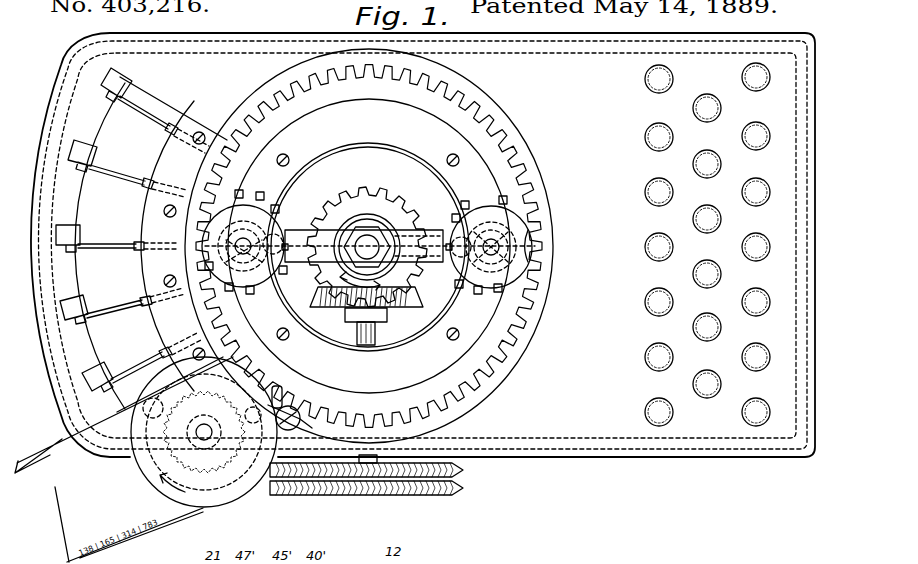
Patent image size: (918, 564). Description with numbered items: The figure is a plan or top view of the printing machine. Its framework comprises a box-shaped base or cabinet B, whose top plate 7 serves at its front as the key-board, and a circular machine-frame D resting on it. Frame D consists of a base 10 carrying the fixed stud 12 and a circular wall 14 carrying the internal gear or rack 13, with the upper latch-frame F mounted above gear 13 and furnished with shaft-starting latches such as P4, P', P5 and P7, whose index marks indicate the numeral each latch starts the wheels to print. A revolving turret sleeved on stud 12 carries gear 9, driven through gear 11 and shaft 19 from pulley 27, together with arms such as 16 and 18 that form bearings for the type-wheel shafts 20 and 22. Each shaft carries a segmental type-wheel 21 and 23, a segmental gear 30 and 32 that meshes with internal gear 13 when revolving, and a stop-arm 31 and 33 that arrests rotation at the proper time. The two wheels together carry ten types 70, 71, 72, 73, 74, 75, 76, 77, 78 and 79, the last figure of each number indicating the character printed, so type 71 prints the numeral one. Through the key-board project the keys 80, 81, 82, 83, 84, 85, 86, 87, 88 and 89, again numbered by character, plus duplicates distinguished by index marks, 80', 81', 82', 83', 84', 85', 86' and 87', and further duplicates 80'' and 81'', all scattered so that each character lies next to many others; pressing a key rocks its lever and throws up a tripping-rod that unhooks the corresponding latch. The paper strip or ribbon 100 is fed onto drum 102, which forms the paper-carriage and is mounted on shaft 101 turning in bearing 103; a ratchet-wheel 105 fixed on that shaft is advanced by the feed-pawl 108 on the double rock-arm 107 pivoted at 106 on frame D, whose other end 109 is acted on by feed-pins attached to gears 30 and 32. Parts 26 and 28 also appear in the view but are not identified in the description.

The top plate 7 is at (567, 425).
The gear 9 is at (375, 208).
The base 10 is at (368, 247).
The gear 11 is at (388, 302).
The fixed stud 12 is at (367, 247).
The internal gear 13 is at (508, 353).
The circular wall 14 is at (498, 378).
The arm 16 is at (323, 232).
The arm 18 is at (415, 234).
The shaft 19 is at (376, 336).
The type-wheel shaft 20 is at (243, 238).
The segmental type-wheel 21 is at (262, 200).
The type-wheel shaft 22 is at (491, 256).
The segmental type-wheel 23 is at (465, 201).
The lug 26 is at (230, 266).
The pulley 27 is at (463, 482).
The rim 28 is at (530, 224).
The segmental gear 30 is at (285, 270).
The stop-arm 31 is at (260, 262).
The segmental gear 32 is at (478, 294).
The stop-arm 33 is at (477, 232).
The type 70 is at (285, 246).
The type 71 is at (279, 209).
The type 72 is at (462, 206).
The type 73 is at (447, 248).
The type 74 is at (239, 190).
The type 75 is at (259, 302).
The type 76 is at (458, 285).
The type 77 is at (229, 292).
The type 78 is at (503, 196).
The type 79 is at (497, 293).
The key 80 is at (634, 198).
The key 81 is at (708, 96).
The key 82 is at (693, 219).
The key 83 is at (639, 138).
The key 84 is at (641, 80).
The key 85 is at (691, 327).
The key 86 is at (692, 164).
The key 87 is at (767, 408).
The key 88 is at (709, 399).
The key 89 is at (767, 76).
The duplicate key 80' is at (767, 360).
The duplicate key 81' is at (636, 254).
The duplicate key 82' is at (637, 409).
The duplicate key 83' is at (643, 357).
The duplicate key 84' is at (689, 274).
The duplicate key 85' is at (766, 180).
The duplicate key 86' is at (636, 302).
The duplicate key 87' is at (767, 237).
The duplicate key 80'' is at (768, 126).
The duplicate key 81'' is at (765, 314).
The strip or ribbon 100 is at (38, 458).
The shaft 101 is at (204, 442).
The drum 102 is at (150, 460).
The bearing 103 is at (185, 420).
The ratchet-wheel 105 is at (215, 460).
The pivot 106 is at (302, 419).
The double rock-arm 107 is at (292, 408).
The feed-pawl 108 is at (248, 415).
The rock-arm end 109 is at (283, 388).
The base or cabinet B is at (542, 94).
The circular machine-frame D is at (419, 392).
The upper latch-frame F is at (151, 244).
The shaft-starting latch P4 is at (171, 132).
The shaft-starting latch P' is at (127, 168).
The shaft-starting latch P5 is at (149, 300).
The shaft-starting latch P7 is at (166, 352).